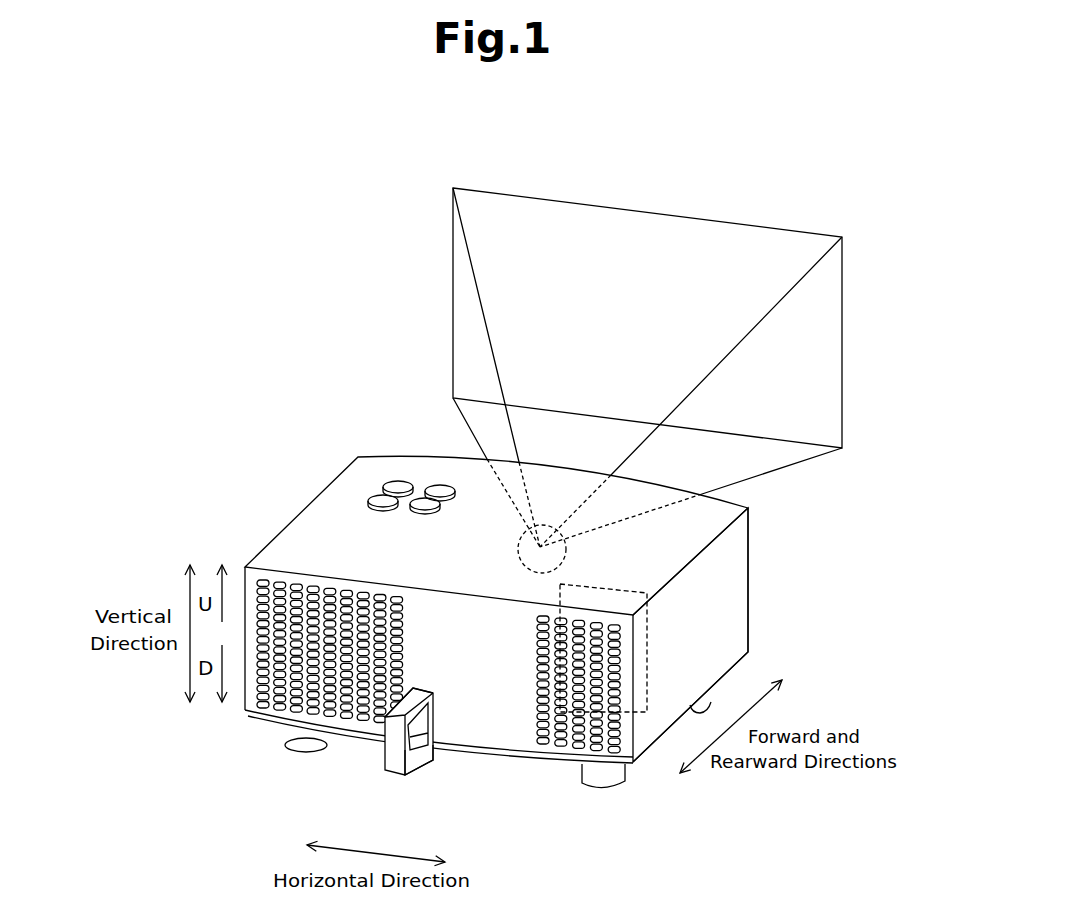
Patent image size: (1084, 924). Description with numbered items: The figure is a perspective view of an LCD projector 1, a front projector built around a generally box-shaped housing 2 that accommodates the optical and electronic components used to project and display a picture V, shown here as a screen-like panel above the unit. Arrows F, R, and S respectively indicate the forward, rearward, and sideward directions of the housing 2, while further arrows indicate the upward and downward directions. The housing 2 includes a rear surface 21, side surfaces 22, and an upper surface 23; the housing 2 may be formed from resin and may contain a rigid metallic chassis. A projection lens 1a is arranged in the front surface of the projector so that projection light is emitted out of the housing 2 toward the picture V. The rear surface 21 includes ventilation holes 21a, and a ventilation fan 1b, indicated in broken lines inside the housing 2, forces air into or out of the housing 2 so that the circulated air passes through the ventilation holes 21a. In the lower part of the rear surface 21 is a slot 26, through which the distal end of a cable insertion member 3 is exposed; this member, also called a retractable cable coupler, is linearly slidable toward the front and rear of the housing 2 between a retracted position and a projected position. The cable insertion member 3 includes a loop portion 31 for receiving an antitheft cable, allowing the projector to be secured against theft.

The LCD projector 1 is at (527, 621).
The projection lens 1a is at (520, 542).
The ventilation fan 1b is at (652, 653).
The housing 2 is at (748, 590).
The cable insertion member 3 is at (384, 762).
The rear surface 21 is at (470, 752).
The ventilation holes 21a is at (277, 752).
The side surfaces 22 is at (742, 632).
The upper surface 23 is at (372, 460).
The slot 26 is at (423, 690).
The loop portion 31 is at (416, 755).
The picture V is at (455, 290).
The forward direction arrow F is at (568, 472).
The rearward direction arrow R is at (448, 583).
The sideward direction arrow S is at (310, 512).